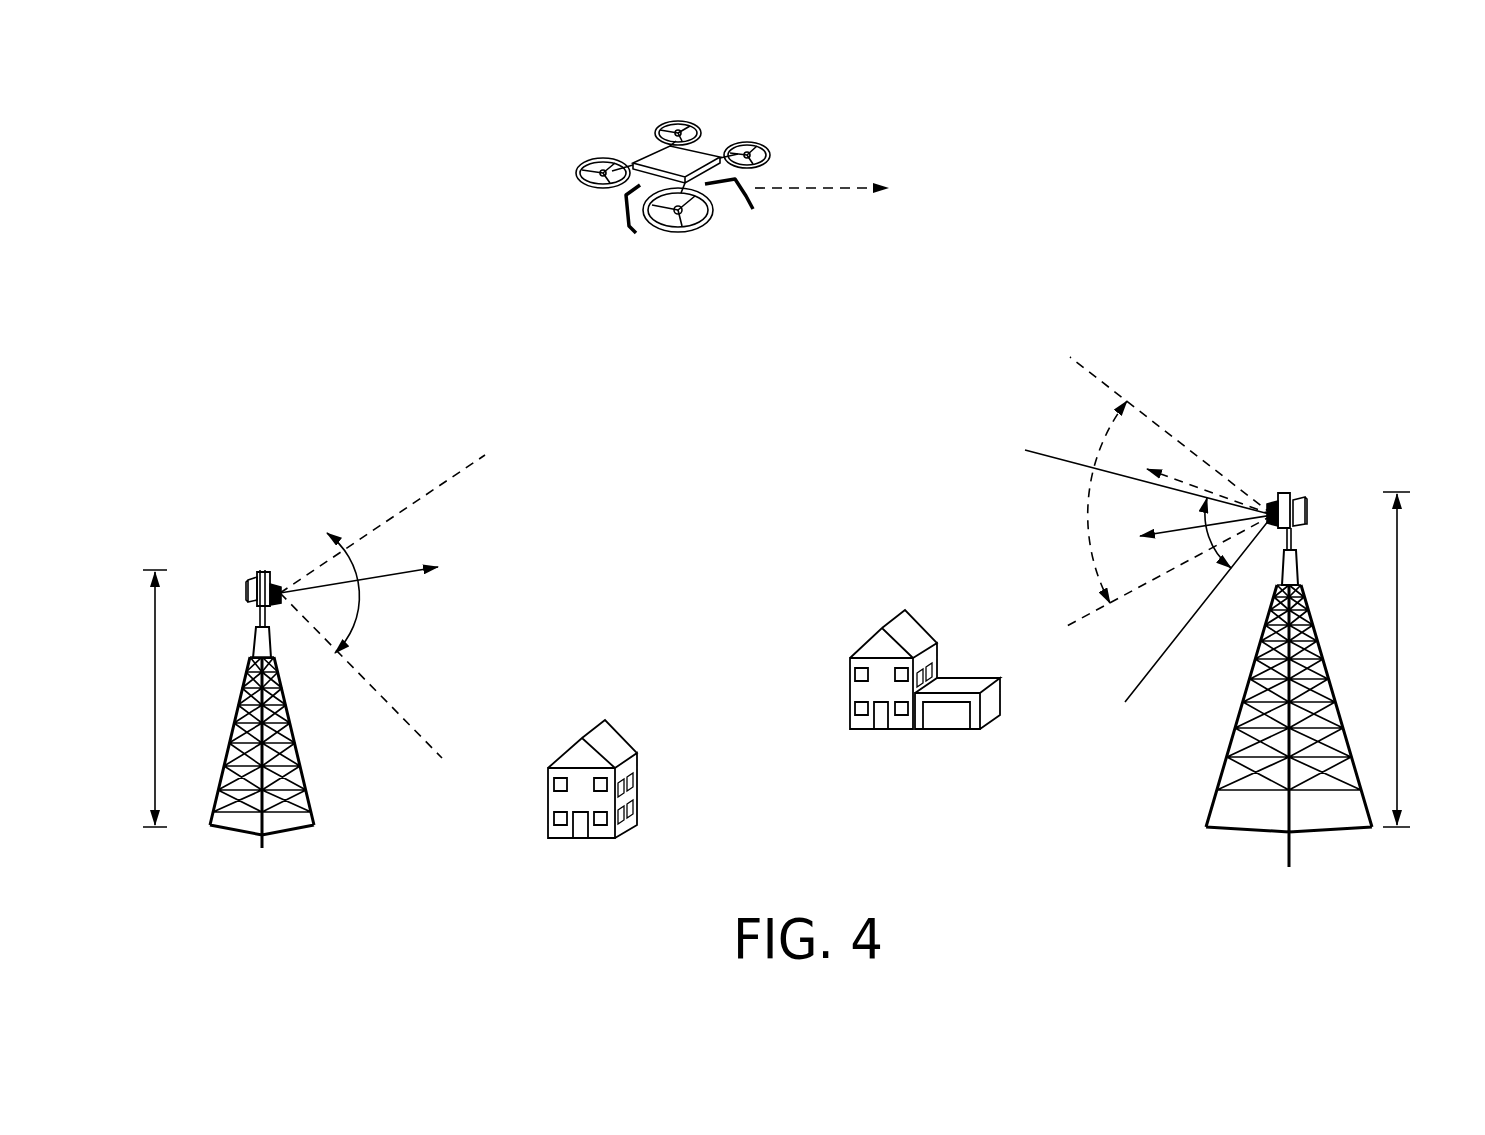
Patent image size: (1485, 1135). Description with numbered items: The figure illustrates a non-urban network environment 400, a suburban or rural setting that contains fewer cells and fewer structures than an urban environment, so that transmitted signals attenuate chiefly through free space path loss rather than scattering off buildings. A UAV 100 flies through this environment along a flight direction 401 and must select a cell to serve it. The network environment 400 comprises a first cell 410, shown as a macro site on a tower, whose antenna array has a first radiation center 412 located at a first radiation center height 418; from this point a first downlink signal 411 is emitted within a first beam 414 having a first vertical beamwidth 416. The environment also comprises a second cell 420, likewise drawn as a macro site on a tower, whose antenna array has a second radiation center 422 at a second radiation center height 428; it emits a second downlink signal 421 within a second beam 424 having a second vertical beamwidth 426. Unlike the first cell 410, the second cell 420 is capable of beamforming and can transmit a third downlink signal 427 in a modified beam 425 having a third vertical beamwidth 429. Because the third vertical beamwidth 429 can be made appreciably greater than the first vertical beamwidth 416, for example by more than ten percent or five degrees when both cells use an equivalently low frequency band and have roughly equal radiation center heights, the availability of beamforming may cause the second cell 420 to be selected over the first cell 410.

The non-urban network environment 400 is at (1292, 111).
The UAV 100 is at (746, 243).
The flight path direction 401 is at (833, 187).
The first cell 410 is at (302, 776).
The first radiation center 412 is at (281, 588).
The first radiation center height 418 is at (152, 655).
The first beam 414 is at (405, 510).
The first downlink signal 411 is at (409, 574).
The first vertical beamwidth 416 is at (359, 610).
The second cell 420 is at (1233, 744).
The second radiation center 422 is at (1268, 506).
The modified beam 425 is at (1165, 431).
The second beam 424 is at (1181, 632).
The third downlink signal 427 is at (1200, 487).
The second downlink signal 421 is at (1172, 531).
The third vertical beamwidth 429 is at (1088, 500).
The second vertical beamwidth 426 is at (1217, 560).
The second radiation center height 428 is at (1398, 581).